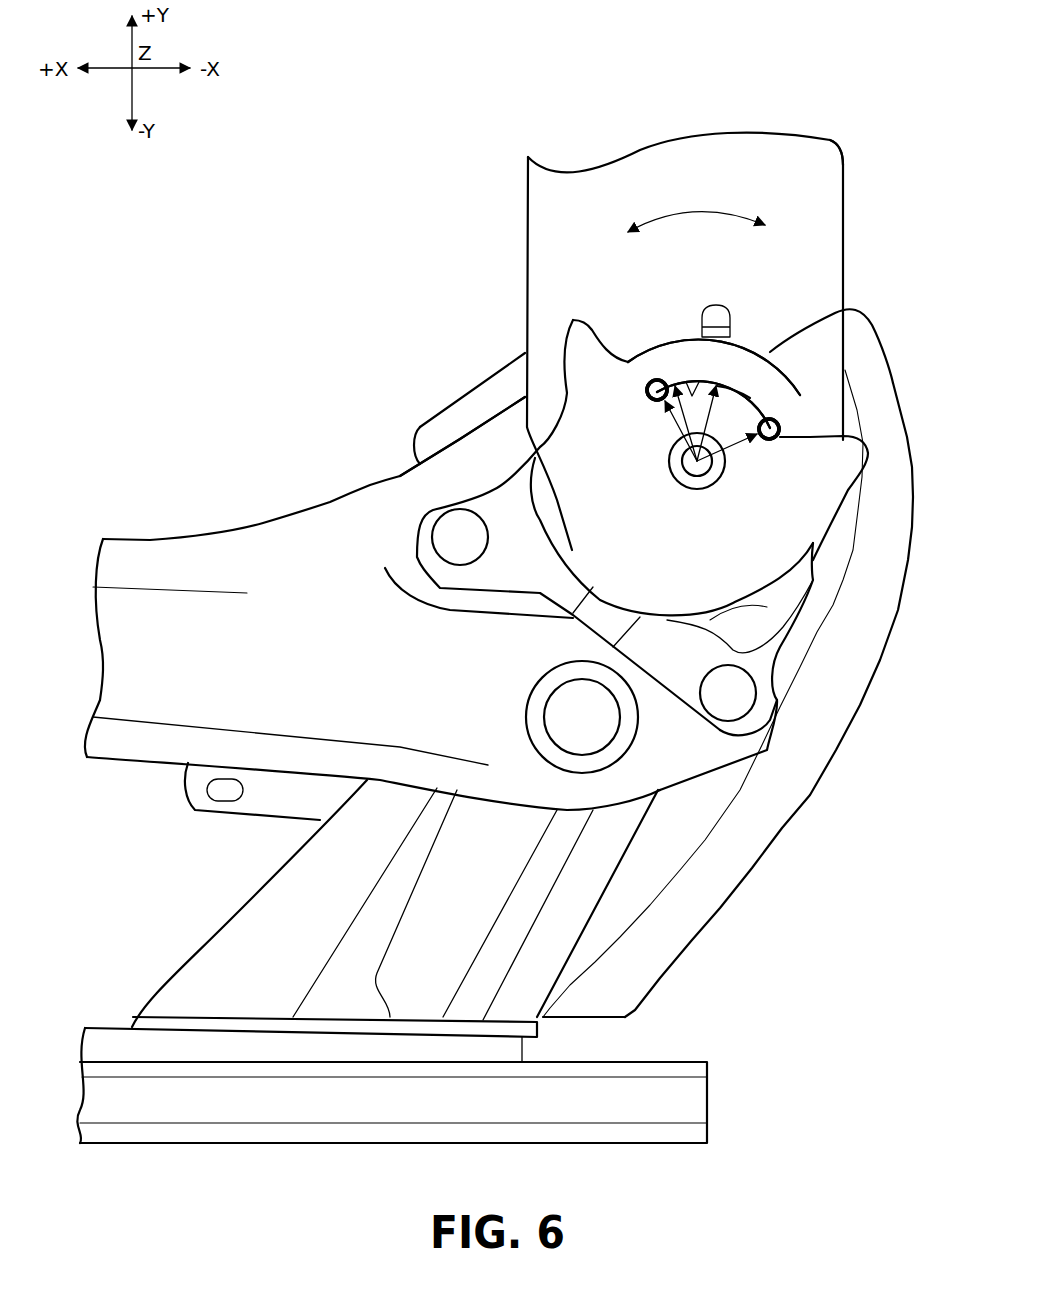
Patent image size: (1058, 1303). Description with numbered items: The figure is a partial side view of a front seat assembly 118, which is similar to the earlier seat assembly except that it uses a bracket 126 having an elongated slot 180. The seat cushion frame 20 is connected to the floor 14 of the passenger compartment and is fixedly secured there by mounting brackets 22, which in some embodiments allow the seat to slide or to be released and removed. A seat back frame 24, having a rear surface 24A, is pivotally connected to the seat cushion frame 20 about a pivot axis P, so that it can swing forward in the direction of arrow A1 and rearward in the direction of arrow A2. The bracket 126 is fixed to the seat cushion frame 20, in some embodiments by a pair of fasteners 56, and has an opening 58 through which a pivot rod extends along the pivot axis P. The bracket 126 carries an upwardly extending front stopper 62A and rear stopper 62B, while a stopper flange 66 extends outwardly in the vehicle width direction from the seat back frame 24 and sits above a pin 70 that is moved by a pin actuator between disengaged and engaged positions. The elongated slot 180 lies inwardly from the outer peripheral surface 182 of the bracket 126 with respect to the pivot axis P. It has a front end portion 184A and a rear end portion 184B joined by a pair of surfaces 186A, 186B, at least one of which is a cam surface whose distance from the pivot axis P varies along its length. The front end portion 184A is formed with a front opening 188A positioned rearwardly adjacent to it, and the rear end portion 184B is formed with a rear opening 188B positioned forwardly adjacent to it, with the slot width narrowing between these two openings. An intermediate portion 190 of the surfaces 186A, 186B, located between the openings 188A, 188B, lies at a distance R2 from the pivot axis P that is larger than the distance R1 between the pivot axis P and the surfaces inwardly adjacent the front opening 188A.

The floor 14 is at (113, 1027).
The seat cushion frame 20 is at (147, 540).
The mounting brackets 22 is at (237, 913).
The seat back frame 24 is at (848, 253).
The rear surface 24A is at (843, 172).
The fasteners 56 is at (453, 540).
The opening 58 is at (690, 483).
The front stopper 62A is at (573, 320).
The rear stopper 62B is at (893, 383).
The stopper flange 66 is at (730, 308).
The pin 70 is at (648, 377).
The front seat assembly 118 is at (283, 303).
The bracket 126 is at (831, 541).
The elongated slot 180 is at (805, 385).
The outer peripheral surface 182 is at (674, 343).
The front end portion 184A is at (645, 392).
The rear end portion 184B is at (786, 429).
The surface 186A is at (693, 378).
The surface 186B is at (740, 387).
The front opening 188A is at (649, 397).
The rear opening 188B is at (778, 436).
The intermediate portion 190 is at (752, 366).
The arrow A1 is at (681, 233).
The arrow A2 is at (786, 229).
The distance R1 is at (707, 409).
The distance R2 is at (708, 431).
The pivot axis P is at (703, 468).